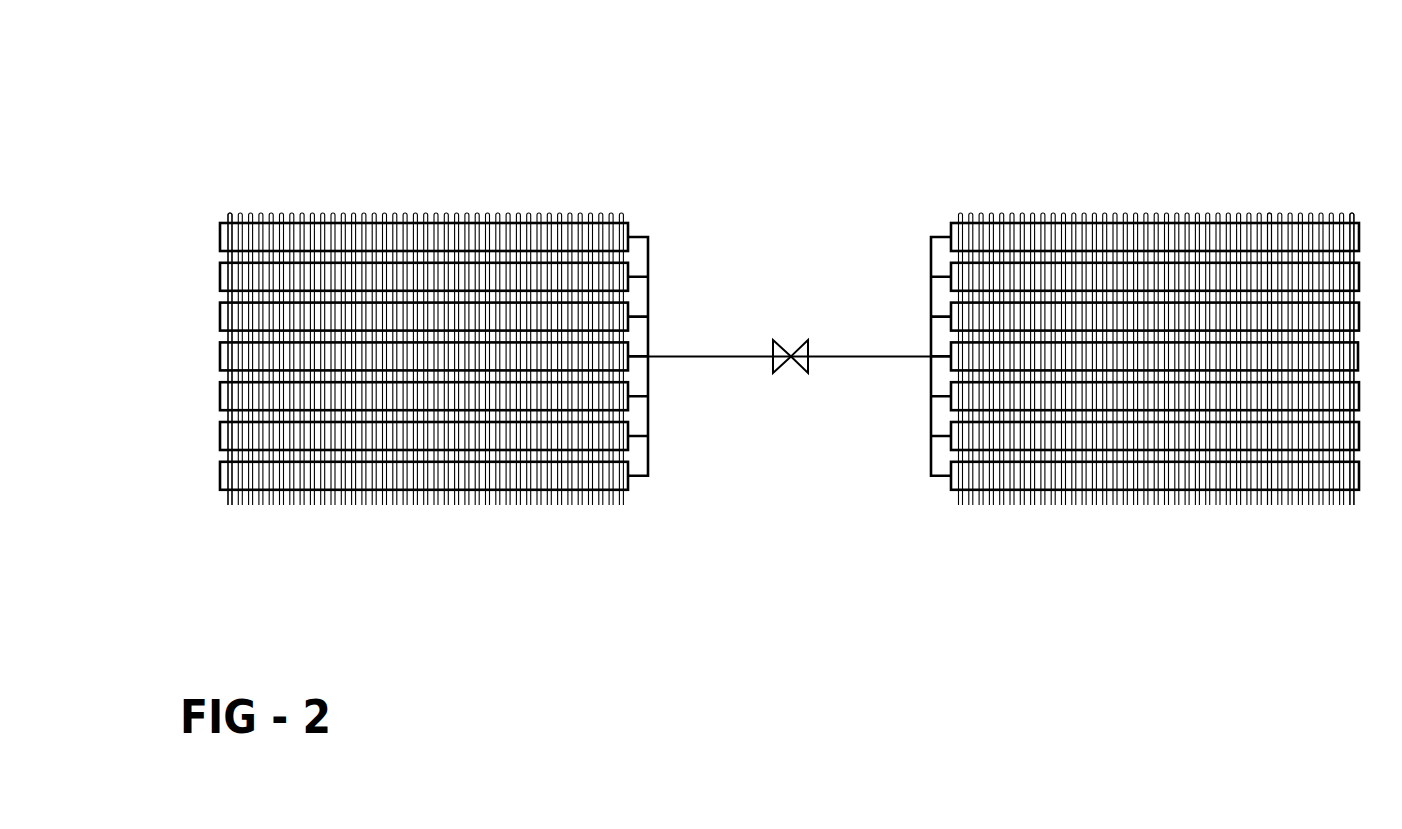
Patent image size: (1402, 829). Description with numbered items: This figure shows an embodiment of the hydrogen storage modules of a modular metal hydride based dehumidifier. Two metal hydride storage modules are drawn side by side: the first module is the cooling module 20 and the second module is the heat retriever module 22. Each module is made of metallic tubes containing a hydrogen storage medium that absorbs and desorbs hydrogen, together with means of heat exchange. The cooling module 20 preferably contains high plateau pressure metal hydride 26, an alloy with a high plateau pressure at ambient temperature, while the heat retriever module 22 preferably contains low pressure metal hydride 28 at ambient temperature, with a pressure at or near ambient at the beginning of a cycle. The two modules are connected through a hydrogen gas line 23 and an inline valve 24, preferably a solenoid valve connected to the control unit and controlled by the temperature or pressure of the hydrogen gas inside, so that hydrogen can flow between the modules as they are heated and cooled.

The cooling module 20 is at (305, 158).
The heat retriever module 22 is at (1164, 142).
The hydrogen gas line 23 is at (729, 347).
The valve 24 is at (781, 356).
The high plateau pressure metal hydride 26 is at (212, 350).
The low pressure metal hydride 28 is at (1261, 466).